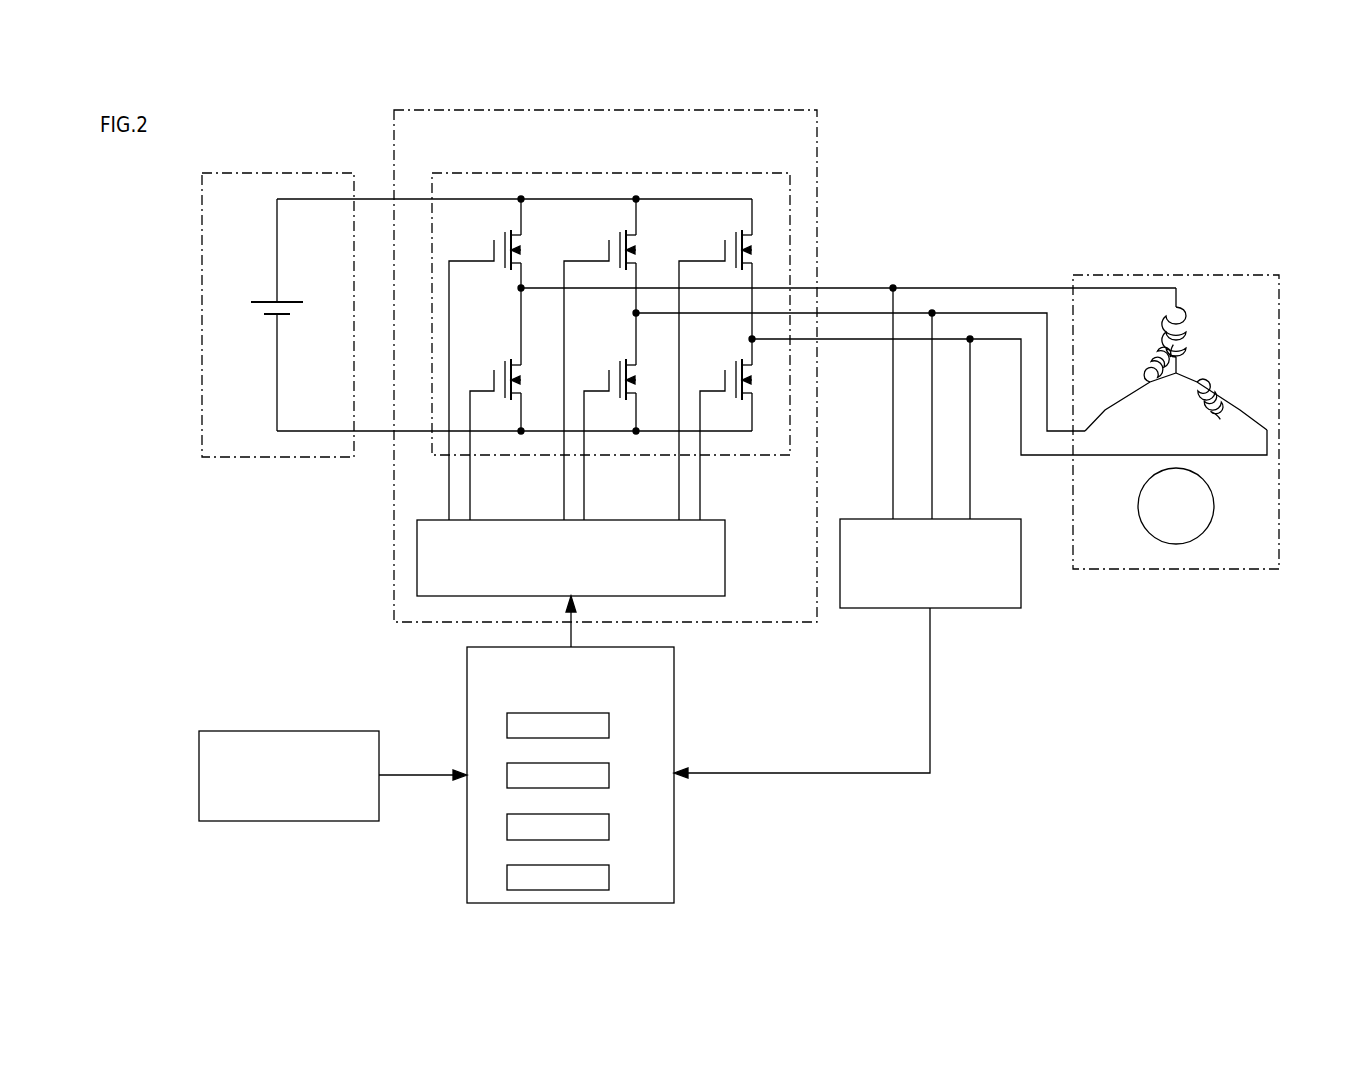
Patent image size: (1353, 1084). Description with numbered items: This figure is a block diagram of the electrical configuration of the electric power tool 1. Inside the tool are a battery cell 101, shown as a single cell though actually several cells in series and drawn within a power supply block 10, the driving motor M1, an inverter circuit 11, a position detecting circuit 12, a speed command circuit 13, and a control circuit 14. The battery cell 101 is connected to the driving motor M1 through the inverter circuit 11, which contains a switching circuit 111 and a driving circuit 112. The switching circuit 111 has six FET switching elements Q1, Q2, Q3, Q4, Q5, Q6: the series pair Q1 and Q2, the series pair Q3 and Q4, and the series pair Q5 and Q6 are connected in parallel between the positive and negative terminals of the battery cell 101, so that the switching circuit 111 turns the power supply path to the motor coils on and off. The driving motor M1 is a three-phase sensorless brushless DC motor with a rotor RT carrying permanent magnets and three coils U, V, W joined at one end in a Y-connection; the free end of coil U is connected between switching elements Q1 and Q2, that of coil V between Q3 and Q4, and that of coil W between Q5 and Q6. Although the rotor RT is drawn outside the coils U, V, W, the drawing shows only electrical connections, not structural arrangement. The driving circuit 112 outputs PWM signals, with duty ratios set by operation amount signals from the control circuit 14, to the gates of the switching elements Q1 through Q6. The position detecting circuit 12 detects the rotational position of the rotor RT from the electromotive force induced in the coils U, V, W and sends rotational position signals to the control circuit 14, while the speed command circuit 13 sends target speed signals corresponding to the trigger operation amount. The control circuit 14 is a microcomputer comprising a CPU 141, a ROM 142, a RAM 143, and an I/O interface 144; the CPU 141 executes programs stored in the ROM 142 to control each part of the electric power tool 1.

The electric power tool 1 is at (946, 125).
The DC power supply 10 is at (281, 173).
The battery cell 101 is at (290, 302).
The inverter circuit 11 is at (818, 145).
The switching circuit 111 is at (614, 173).
The driving circuit 112 is at (620, 520).
The position detecting circuit 12 is at (992, 519).
The speed command circuit 13 is at (290, 731).
The control circuit 14 is at (674, 697).
The CPU 141 is at (598, 712).
The ROM 142 is at (598, 762).
The RAM 143 is at (598, 813).
The input/output (I/O) interface 144 is at (598, 864).
The driving motor M1 is at (1178, 275).
The switching element Q1 is at (502, 359).
The switching element Q2 is at (512, 404).
The switching element Q3 is at (617, 359).
The switching element Q4 is at (627, 416).
The switching element Q5 is at (733, 359).
The switching element Q6 is at (743, 429).
The coil U is at (1188, 330).
The coil V is at (1131, 391).
The coil W is at (1221, 408).
The rotor RT is at (1214, 504).